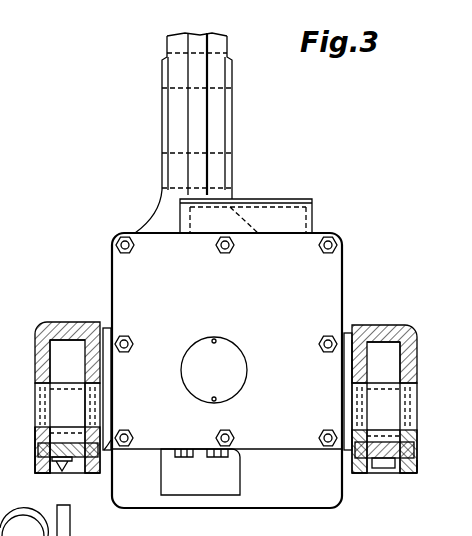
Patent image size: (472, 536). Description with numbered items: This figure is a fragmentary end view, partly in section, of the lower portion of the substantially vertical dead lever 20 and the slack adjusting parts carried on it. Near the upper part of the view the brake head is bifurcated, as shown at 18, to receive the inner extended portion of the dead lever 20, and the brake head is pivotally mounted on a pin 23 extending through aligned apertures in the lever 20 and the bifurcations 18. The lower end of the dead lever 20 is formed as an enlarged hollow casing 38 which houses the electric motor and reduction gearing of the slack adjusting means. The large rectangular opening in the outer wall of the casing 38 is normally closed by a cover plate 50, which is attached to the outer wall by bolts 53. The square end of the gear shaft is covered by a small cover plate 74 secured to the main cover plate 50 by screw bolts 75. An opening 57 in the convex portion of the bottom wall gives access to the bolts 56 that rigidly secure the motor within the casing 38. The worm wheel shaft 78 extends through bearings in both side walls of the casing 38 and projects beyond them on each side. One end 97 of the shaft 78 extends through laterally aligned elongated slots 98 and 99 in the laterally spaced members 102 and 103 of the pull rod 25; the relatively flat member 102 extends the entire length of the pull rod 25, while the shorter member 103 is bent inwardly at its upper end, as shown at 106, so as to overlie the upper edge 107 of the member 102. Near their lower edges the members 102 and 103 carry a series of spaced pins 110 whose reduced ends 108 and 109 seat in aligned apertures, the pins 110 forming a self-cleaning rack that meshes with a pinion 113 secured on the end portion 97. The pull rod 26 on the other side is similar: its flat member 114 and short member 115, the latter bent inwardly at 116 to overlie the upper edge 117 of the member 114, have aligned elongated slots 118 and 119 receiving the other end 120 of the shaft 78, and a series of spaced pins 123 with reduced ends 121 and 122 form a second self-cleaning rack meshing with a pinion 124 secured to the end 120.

The bifurcations 18 is at (220, 105).
The dead lever 20 is at (200, 40).
The pin 23 is at (222, 143).
The pull rod 25 is at (38, 472).
The pull rod 26 is at (417, 474).
The casing 38 is at (345, 233).
The cover plate 50 is at (336, 262).
The bolts 53 is at (116, 242).
The bolts 56 is at (210, 458).
The opening 57 is at (180, 488).
The small cover plate 74 is at (237, 366).
The screw bolts 75 is at (215, 339).
The shaft 78 is at (36, 411).
The end of shaft 97 is at (45, 398).
The elongated slot 98 is at (100, 392).
The elongated slot 99 is at (38, 385).
The member 102 is at (100, 376).
The member 103 is at (35, 362).
The inwardly bent upper end 106 is at (68, 330).
The upper edge 107 is at (104, 331).
The reduced end 108 is at (113, 442).
The reduced end 109 is at (36, 448).
The pins 110 is at (63, 472).
The pinion 113 is at (65, 352).
The flat member 114 is at (350, 367).
The member 115 is at (412, 350).
The inwardly bent upper portion 116 is at (368, 326).
The upper edge 117 is at (356, 334).
The elongated slot 118 is at (358, 391).
The elongated slot 119 is at (410, 388).
The end of shaft 120 is at (410, 410).
The reduced end 121 is at (356, 452).
The reduced end 122 is at (416, 450).
The pins 123 is at (380, 469).
The pinion 124 is at (383, 355).